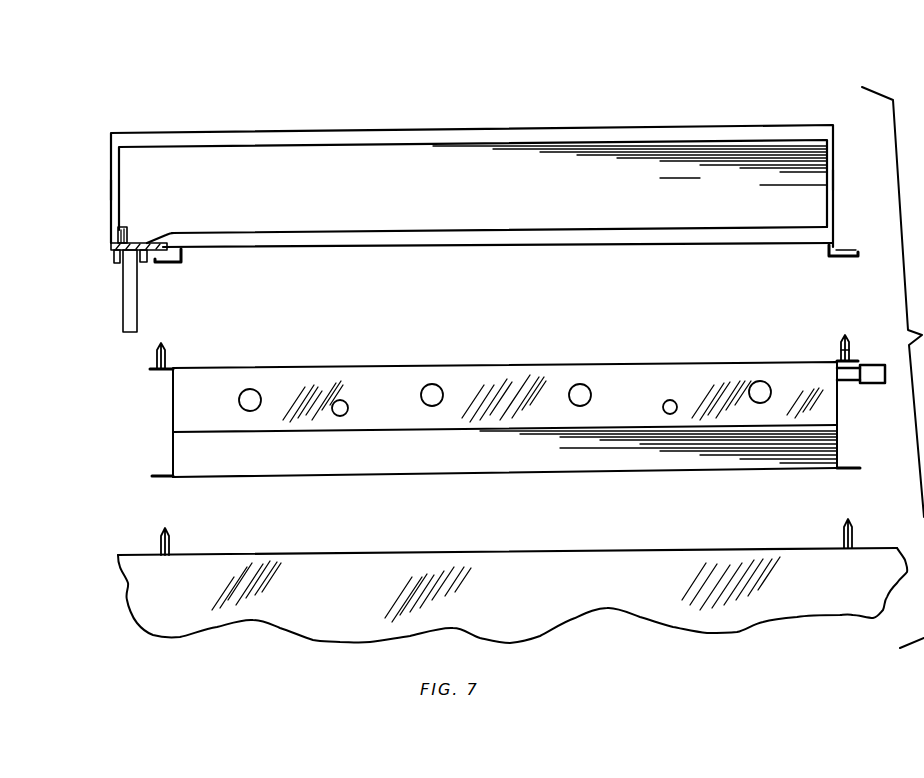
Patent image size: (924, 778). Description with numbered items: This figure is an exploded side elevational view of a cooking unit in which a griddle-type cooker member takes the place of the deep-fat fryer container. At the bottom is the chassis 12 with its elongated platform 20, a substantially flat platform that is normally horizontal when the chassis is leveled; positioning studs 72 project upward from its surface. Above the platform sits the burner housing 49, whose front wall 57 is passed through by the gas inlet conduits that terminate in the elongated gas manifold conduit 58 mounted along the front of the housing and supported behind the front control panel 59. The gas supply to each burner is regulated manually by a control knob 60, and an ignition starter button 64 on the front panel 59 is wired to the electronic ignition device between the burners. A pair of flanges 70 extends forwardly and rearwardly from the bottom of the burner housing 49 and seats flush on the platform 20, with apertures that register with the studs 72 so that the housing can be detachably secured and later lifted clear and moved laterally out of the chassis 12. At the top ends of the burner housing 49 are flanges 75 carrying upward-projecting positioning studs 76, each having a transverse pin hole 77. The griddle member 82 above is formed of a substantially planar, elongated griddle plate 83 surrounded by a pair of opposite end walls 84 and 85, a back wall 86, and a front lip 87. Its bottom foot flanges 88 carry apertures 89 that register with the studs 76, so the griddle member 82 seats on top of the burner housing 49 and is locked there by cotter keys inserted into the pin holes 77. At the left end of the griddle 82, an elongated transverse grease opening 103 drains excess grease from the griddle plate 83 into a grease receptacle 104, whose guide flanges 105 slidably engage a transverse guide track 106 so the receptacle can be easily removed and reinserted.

The chassis 12 is at (709, 23).
The platform 20 is at (528, 552).
The burner housing 49 is at (146, 419).
The front wall 57 is at (471, 461).
The gas manifold conduit 58 is at (852, 381).
The front control panel 59 is at (398, 418).
The control knob 60 is at (573, 385).
The ignition starter button 64 is at (345, 400).
The flange 70 is at (853, 466).
The positioning stud 72 is at (168, 543).
The flange 75 is at (165, 376).
The positioning stud 76 is at (166, 350).
The pin hole 77 is at (850, 346).
The griddle member 82 is at (438, 126).
The griddle plate 83 is at (148, 246).
The end wall 84 is at (111, 186).
The end wall 85 is at (834, 177).
The back wall 86 is at (508, 207).
The front lip 87 is at (327, 240).
The bottom foot flange 88 is at (186, 277).
The aperture 89 is at (841, 260).
The grease opening 103 is at (118, 228).
The grease receptacle 104 is at (137, 309).
The guide flange 105 is at (132, 253).
The guide track 106 is at (112, 256).